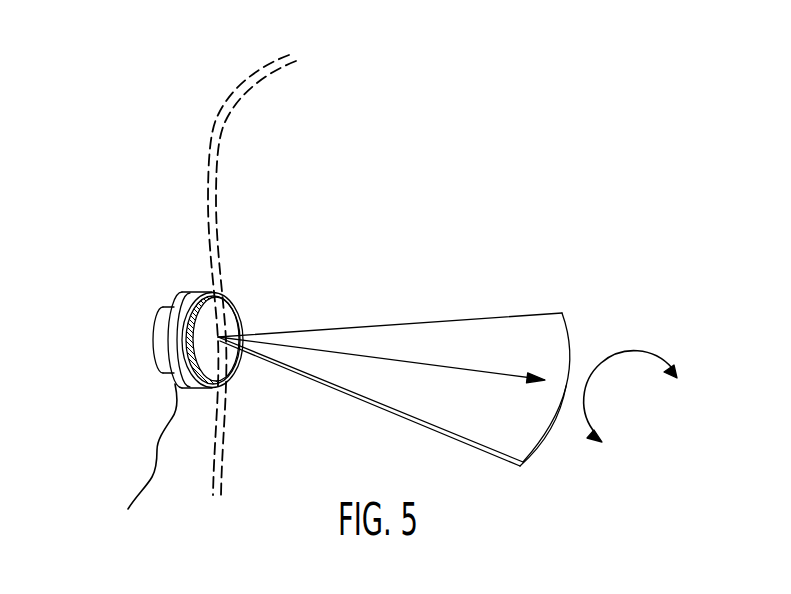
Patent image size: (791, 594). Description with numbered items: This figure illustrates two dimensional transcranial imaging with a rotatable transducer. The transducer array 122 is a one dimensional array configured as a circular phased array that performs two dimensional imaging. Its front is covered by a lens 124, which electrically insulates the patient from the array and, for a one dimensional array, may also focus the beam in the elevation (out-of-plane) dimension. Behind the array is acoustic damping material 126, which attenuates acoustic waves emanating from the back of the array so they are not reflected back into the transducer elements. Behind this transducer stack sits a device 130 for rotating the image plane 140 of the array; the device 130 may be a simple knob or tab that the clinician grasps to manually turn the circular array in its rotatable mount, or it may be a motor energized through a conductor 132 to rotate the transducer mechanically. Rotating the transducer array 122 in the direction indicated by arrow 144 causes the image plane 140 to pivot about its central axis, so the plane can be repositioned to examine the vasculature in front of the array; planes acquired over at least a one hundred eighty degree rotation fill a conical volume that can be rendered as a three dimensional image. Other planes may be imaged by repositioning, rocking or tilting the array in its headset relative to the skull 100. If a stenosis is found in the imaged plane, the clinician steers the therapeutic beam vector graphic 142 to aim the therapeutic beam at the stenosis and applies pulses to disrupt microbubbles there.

The skull 100 is at (218, 170).
The transducer array 122 is at (190, 293).
The lens 124 is at (237, 317).
The acoustic damping material 126 is at (177, 307).
The device for rotating the image plane 130 is at (158, 338).
The conductor 132 is at (142, 488).
The image plane 140 is at (460, 325).
The therapeutic beam vector graphic 142 is at (465, 370).
The arrow 144 is at (651, 356).